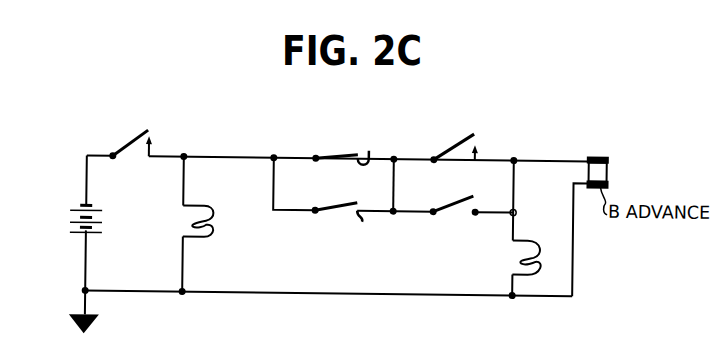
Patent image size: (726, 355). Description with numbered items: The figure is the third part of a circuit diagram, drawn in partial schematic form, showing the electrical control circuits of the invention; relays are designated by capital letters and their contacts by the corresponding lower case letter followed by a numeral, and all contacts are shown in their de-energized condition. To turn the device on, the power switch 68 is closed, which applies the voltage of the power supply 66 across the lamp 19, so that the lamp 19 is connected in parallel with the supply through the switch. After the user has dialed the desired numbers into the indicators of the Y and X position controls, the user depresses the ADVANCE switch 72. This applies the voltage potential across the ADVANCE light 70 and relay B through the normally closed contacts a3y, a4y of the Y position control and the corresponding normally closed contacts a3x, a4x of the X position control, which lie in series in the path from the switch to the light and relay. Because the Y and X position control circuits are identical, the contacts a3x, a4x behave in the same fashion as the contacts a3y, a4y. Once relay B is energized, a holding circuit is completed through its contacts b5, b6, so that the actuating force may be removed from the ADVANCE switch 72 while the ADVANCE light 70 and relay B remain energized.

The power switch 68 is at (132, 138).
The power supply 66 is at (84, 236).
The lamp 19 is at (208, 213).
The normally closed contact a3y is at (330, 153).
The normally closed contact a4y is at (368, 150).
The normally closed contact a3x is at (323, 213).
The normally closed contact a4x is at (362, 221).
The relay contact b5 is at (443, 216).
The relay contact b6 is at (473, 215).
The ADVANCE light 70 is at (535, 246).
The ADVANCE switch 72 is at (452, 138).